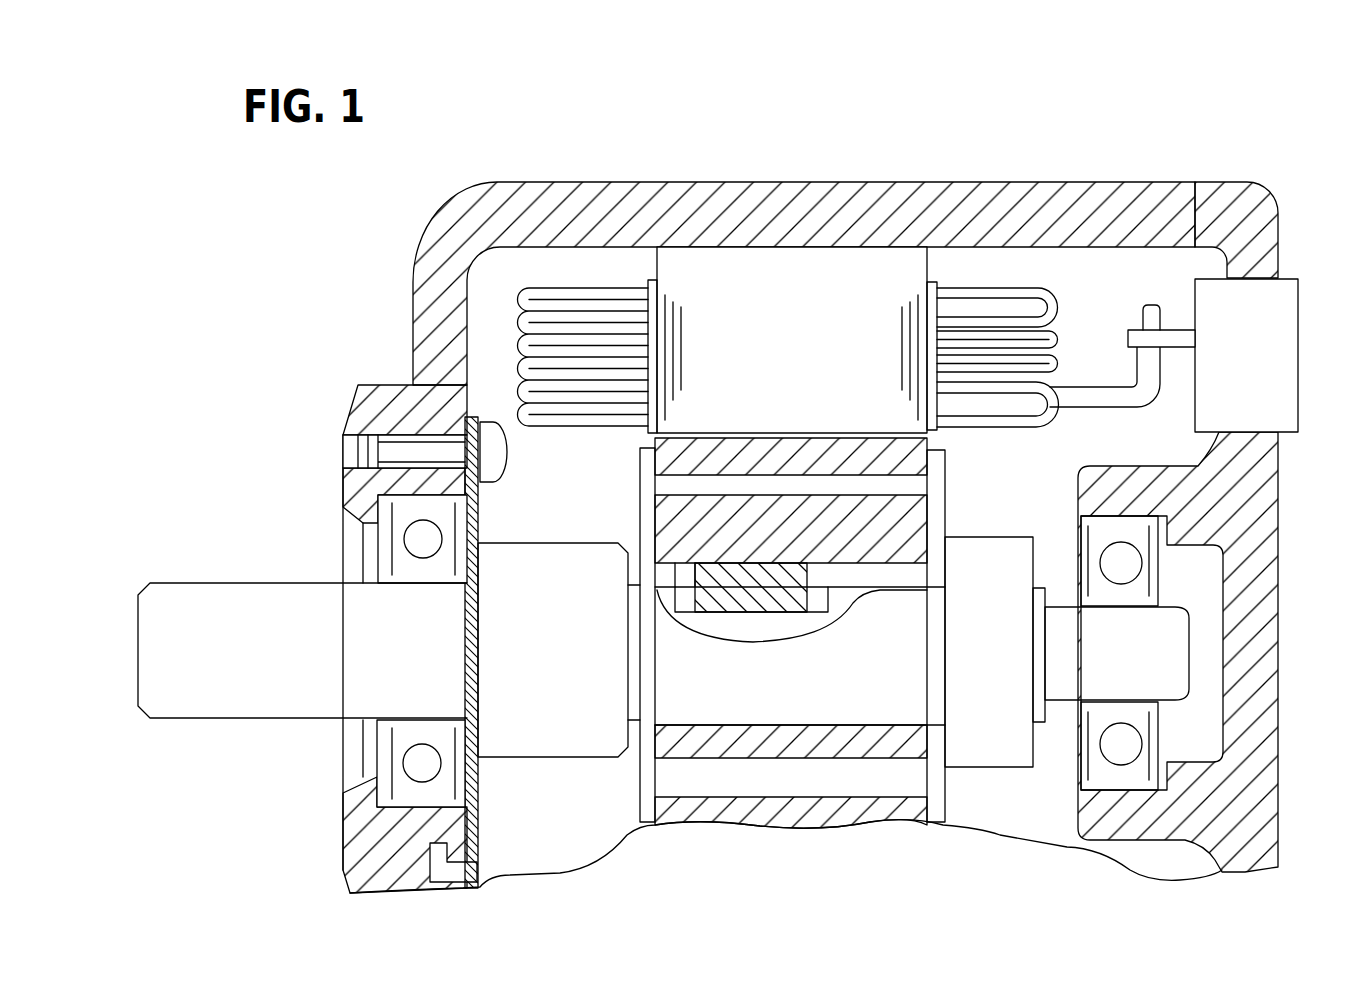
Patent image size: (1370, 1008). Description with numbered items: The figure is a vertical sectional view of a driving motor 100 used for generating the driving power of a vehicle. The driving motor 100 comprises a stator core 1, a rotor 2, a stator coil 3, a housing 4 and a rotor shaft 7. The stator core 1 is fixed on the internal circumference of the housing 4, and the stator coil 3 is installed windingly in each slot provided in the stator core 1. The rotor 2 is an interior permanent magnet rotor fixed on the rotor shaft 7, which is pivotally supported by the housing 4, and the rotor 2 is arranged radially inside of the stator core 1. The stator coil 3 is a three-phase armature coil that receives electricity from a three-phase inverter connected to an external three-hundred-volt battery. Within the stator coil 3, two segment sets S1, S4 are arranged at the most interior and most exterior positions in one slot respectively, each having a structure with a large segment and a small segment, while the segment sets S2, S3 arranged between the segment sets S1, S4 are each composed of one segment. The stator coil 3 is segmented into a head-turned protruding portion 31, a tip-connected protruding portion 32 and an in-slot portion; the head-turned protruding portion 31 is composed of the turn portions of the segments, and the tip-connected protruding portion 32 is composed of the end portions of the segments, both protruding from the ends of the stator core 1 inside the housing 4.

The driving motor 100 is at (1233, 117).
The stator core 1 is at (765, 283).
The rotor 2 is at (953, 500).
The stator coil 3 is at (1020, 278).
The housing 4 is at (1098, 195).
The rotor shaft 7 is at (202, 697).
The head-turned protruding portion 31 is at (972, 278).
The tip-connected protruding portion 32 is at (588, 278).
The segment set S1 is at (1076, 426).
The segment set S2 is at (1076, 376).
The segment set S3 is at (1076, 351).
The segment set S4 is at (1076, 314).